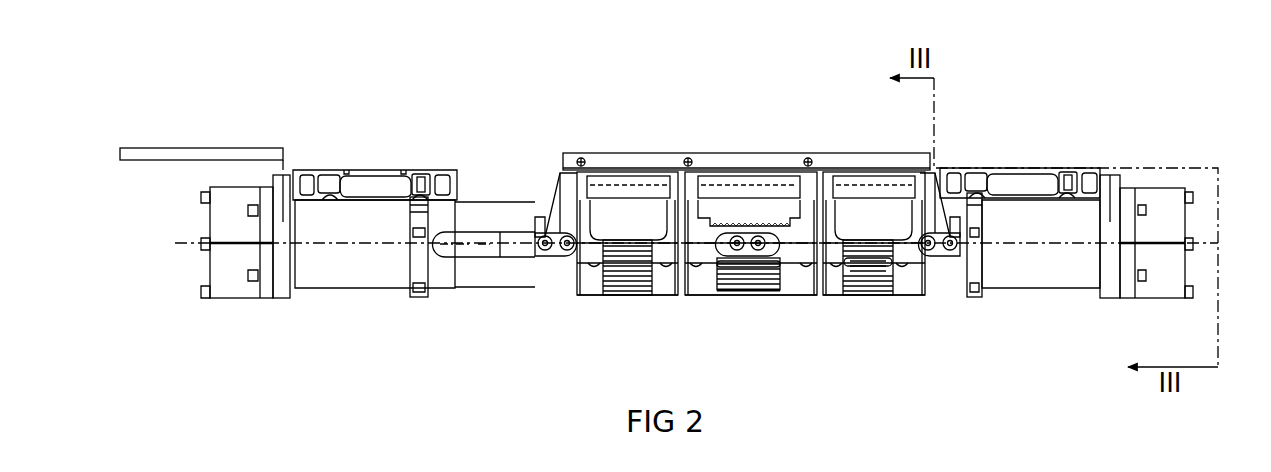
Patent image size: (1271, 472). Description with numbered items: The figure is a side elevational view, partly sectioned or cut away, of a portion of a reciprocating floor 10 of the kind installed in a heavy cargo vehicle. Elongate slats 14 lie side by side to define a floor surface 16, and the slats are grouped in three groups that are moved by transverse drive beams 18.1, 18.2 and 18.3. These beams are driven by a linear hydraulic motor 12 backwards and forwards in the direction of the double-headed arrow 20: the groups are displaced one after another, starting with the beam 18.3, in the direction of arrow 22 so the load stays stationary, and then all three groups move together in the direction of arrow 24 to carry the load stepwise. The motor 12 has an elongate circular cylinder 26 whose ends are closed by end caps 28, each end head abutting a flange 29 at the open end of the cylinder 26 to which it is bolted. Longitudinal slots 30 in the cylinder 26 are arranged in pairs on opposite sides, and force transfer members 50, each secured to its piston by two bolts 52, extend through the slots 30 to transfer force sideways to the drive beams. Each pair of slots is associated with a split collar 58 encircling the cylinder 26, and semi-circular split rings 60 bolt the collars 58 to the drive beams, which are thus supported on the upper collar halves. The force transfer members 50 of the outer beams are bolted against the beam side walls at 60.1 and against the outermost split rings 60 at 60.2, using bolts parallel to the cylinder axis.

The reciprocating floor 10 is at (325, 96).
The linear hydraulic motor 12 is at (378, 296).
The slats 14 is at (145, 152).
The floor surface 16 is at (234, 146).
The transverse drive beam 18.1 is at (830, 190).
The transverse drive beam 18.2 is at (722, 190).
The transverse drive beam 18.3 is at (601, 190).
The double-headed arrow 20 is at (690, 102).
The arrow 22 is at (436, 102).
The arrow 24 is at (858, 102).
The cylinder 26 is at (1000, 290).
The end caps 28 is at (216, 297).
The flange 29 is at (283, 298).
The slots 30 is at (466, 252).
The force transfer members 50 is at (717, 297).
The bolts 52 is at (565, 252).
The split collar 58 is at (630, 297).
The split rings 60 is at (585, 297).
The bolted connection to drive beam side wall 60.1 is at (557, 176).
The bolted connection to split ring 60.2 is at (538, 211).